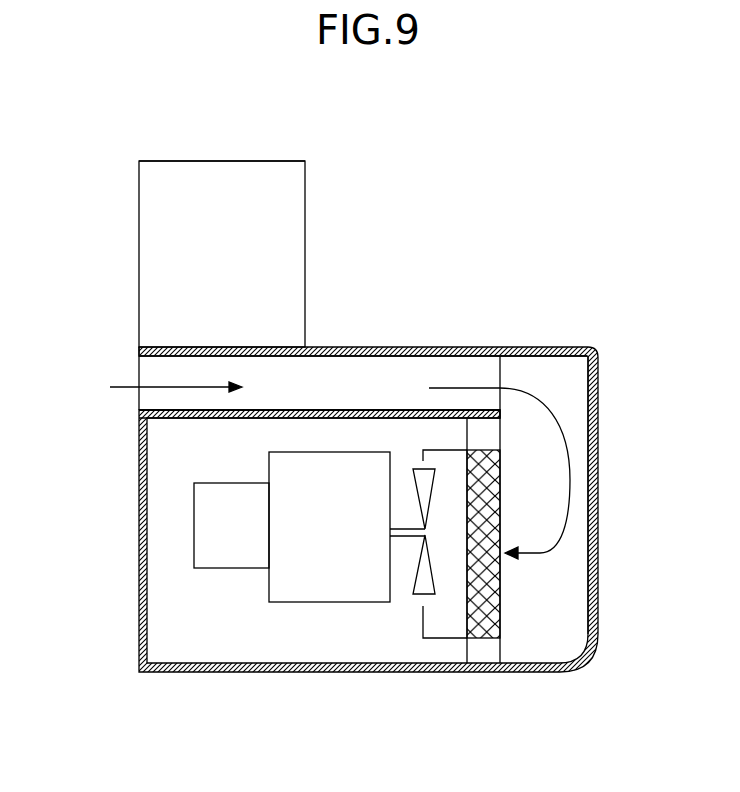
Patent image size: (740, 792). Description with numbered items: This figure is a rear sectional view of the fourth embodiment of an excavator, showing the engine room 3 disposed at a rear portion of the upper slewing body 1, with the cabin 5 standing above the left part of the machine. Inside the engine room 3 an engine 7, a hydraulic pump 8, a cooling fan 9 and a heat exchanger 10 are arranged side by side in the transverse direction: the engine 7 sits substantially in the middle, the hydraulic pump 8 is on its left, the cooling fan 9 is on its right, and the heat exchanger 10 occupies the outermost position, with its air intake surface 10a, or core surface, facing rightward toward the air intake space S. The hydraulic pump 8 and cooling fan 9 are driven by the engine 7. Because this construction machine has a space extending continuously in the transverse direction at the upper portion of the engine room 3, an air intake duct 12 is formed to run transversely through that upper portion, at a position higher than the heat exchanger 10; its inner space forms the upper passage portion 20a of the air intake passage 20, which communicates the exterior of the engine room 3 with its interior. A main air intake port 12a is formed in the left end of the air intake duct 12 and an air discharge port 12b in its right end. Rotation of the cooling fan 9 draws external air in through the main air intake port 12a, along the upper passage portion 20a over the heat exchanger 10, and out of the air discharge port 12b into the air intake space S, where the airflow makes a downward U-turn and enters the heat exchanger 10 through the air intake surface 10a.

The upper slewing body 1 is at (126, 287).
The engine room 3 is at (265, 653).
The cabin 5 is at (305, 215).
The engine 7 is at (338, 602).
The hydraulic pump 8 is at (229, 568).
The cooling fan 9 is at (412, 591).
The heat exchanger 10 is at (508, 577).
The air intake surface 10a is at (500, 577).
The air intake duct 12 is at (325, 339).
The main air intake port 12a is at (138, 368).
The air discharge port 12b is at (500, 378).
The air intake passage 20 is at (549, 493).
The upper passage portion 20a is at (352, 375).
The air intake space S is at (580, 516).